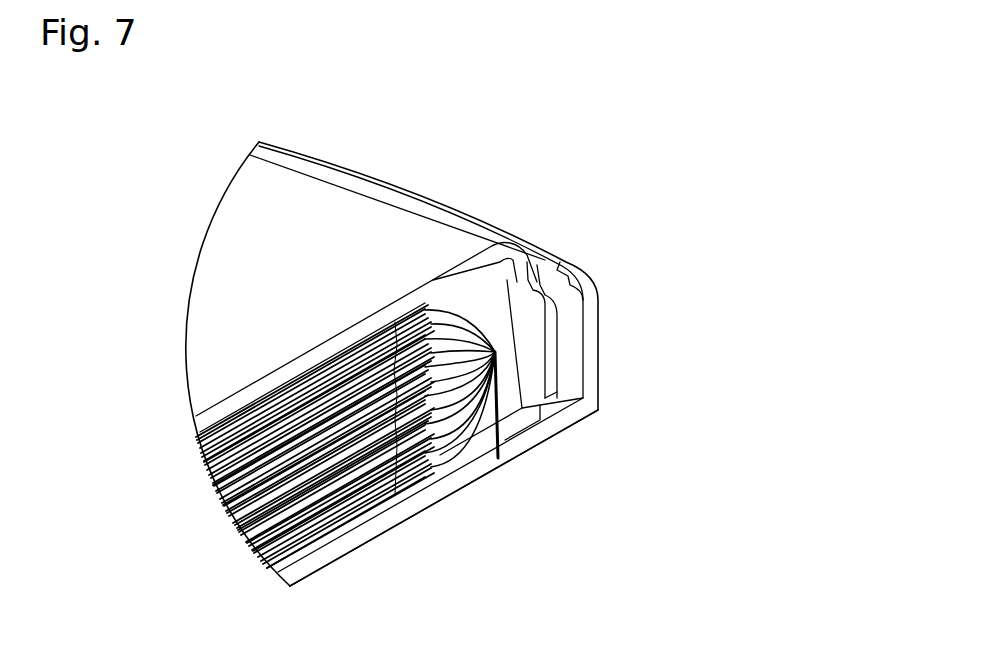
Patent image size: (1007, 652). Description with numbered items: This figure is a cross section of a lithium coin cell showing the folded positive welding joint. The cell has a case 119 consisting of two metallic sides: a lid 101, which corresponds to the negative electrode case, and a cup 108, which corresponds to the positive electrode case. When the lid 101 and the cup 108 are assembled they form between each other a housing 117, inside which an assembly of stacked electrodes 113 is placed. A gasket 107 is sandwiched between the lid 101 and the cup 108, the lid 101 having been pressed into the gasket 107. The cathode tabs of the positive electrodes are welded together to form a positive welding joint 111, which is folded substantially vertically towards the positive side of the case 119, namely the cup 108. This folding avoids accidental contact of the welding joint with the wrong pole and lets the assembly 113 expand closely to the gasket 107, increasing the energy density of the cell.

The lid 101 is at (488, 242).
The gasket 107 is at (572, 354).
The cup 108 is at (598, 410).
The positive welding joint 111 is at (495, 352).
The assembly of stacked electrodes 113 is at (247, 470).
The housing 117 is at (488, 309).
The case 119 is at (313, 258).